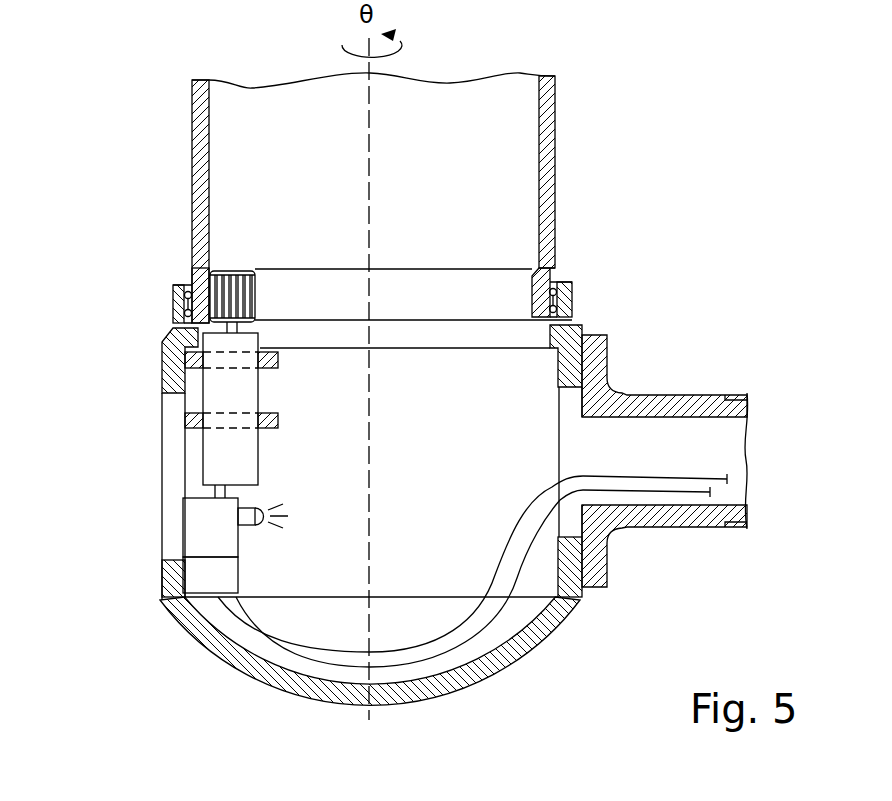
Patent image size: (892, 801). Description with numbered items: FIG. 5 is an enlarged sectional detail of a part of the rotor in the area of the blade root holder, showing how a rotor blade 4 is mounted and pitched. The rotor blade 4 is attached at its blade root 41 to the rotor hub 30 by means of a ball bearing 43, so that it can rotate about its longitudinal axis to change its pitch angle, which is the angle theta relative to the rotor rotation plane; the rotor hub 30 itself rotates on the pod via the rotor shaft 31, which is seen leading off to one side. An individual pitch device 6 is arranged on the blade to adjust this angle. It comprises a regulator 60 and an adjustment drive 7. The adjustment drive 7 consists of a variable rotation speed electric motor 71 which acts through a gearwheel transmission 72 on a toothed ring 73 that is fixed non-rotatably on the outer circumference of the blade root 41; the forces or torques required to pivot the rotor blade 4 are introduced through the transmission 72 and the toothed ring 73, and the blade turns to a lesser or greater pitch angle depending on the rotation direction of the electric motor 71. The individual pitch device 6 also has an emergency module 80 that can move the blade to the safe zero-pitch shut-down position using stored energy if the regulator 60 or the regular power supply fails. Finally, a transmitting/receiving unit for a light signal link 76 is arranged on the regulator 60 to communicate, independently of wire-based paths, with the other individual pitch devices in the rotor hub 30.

The rotor blade 4 is at (248, 92).
The blade root 41 is at (547, 178).
The toothed ring 73 is at (198, 280).
The ball bearing 43 is at (172, 295).
The adjustment drive 7 is at (272, 251).
The gearwheel transmission 72 is at (248, 290).
The electric motor 71 is at (250, 463).
The individual pitch device 6 is at (133, 477).
The regulator 60 is at (193, 527).
The emergency module 80 is at (193, 575).
The light signal link 76 is at (247, 520).
The rotor hub 30 is at (213, 642).
The rotor shaft 31 is at (663, 512).